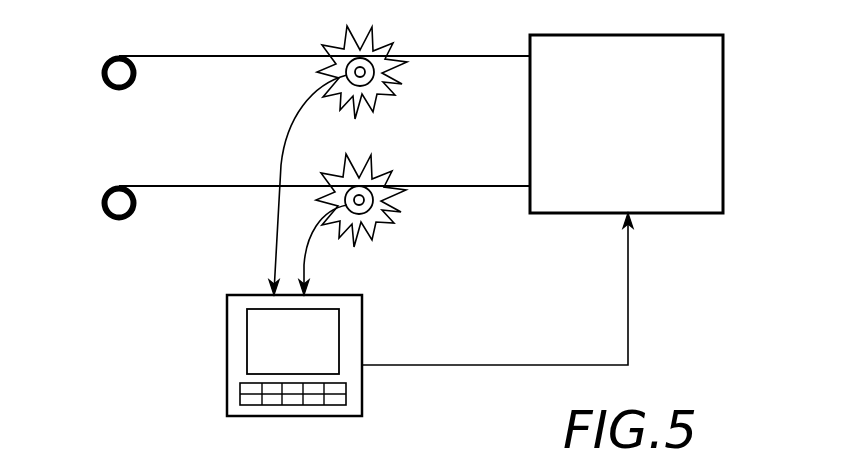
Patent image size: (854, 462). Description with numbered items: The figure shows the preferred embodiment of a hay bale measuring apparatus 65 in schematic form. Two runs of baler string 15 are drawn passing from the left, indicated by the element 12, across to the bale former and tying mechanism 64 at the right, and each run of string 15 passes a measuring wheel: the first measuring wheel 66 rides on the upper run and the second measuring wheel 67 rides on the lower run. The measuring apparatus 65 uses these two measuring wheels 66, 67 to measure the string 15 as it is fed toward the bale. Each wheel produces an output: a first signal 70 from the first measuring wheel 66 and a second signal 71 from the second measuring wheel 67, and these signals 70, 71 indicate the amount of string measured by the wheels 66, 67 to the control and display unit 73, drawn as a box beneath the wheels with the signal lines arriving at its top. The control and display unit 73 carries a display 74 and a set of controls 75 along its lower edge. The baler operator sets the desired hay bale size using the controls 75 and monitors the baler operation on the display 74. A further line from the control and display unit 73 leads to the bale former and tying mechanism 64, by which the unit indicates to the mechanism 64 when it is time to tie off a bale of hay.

The web 12 is at (103, 88).
The string 15 is at (453, 57).
The bale former and tying mechanism 64 is at (650, 142).
The hay bale measuring apparatus 65 is at (708, 302).
The measuring wheel 66 is at (366, 97).
The measuring wheel 67 is at (388, 212).
The signal 70 is at (274, 232).
The signal 71 is at (311, 243).
The control and display unit 73 is at (235, 347).
The display 74 is at (311, 352).
The controls 75 is at (318, 388).